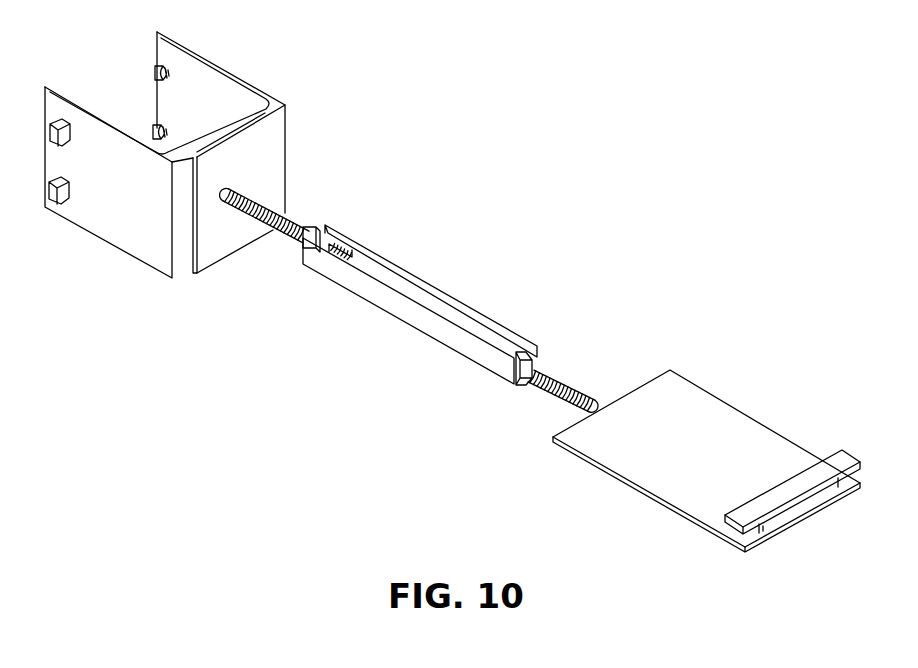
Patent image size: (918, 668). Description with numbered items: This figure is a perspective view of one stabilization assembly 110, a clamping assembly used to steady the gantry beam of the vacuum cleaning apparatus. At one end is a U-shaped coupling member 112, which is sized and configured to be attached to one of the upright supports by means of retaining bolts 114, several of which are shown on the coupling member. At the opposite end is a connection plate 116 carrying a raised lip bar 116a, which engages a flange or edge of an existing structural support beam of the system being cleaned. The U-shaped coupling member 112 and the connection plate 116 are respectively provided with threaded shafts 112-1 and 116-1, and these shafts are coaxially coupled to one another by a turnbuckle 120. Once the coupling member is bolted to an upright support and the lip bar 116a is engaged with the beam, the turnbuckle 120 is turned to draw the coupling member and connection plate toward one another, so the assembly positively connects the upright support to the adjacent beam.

The stabilization assembly 110 is at (575, 225).
The U-shaped coupling member 112 is at (132, 236).
The threaded shaft 112-1 is at (280, 237).
The retaining bolts 114 is at (154, 130).
The connection plate 116 is at (712, 455).
The threaded shaft 116-1 is at (578, 385).
The raised lip bar 116a is at (798, 485).
The turnbuckle 120 is at (455, 298).